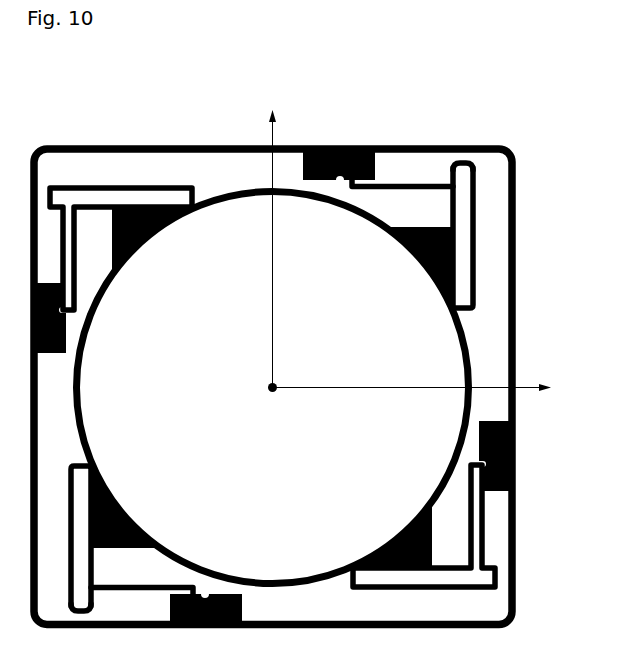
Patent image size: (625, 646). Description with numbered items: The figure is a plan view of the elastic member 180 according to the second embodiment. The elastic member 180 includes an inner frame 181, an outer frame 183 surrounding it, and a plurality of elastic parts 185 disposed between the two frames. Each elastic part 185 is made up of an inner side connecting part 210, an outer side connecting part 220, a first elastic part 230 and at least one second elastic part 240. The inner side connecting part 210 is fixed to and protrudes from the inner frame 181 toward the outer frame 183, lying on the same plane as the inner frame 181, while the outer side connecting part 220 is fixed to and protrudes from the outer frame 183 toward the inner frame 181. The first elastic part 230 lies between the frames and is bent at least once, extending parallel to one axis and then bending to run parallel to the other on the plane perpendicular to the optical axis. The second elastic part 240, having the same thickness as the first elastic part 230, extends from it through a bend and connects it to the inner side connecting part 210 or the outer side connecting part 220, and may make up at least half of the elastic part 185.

The elastic member 180 is at (583, 63).
The inner frame 181 is at (470, 362).
The outer frame 183 is at (516, 322).
The elastic part 185 is at (481, 228).
The inner side connecting part 210 is at (455, 262).
The outer side connecting part 220 is at (338, 145).
The first elastic part 230 is at (478, 168).
The second elastic part 240 is at (407, 184).